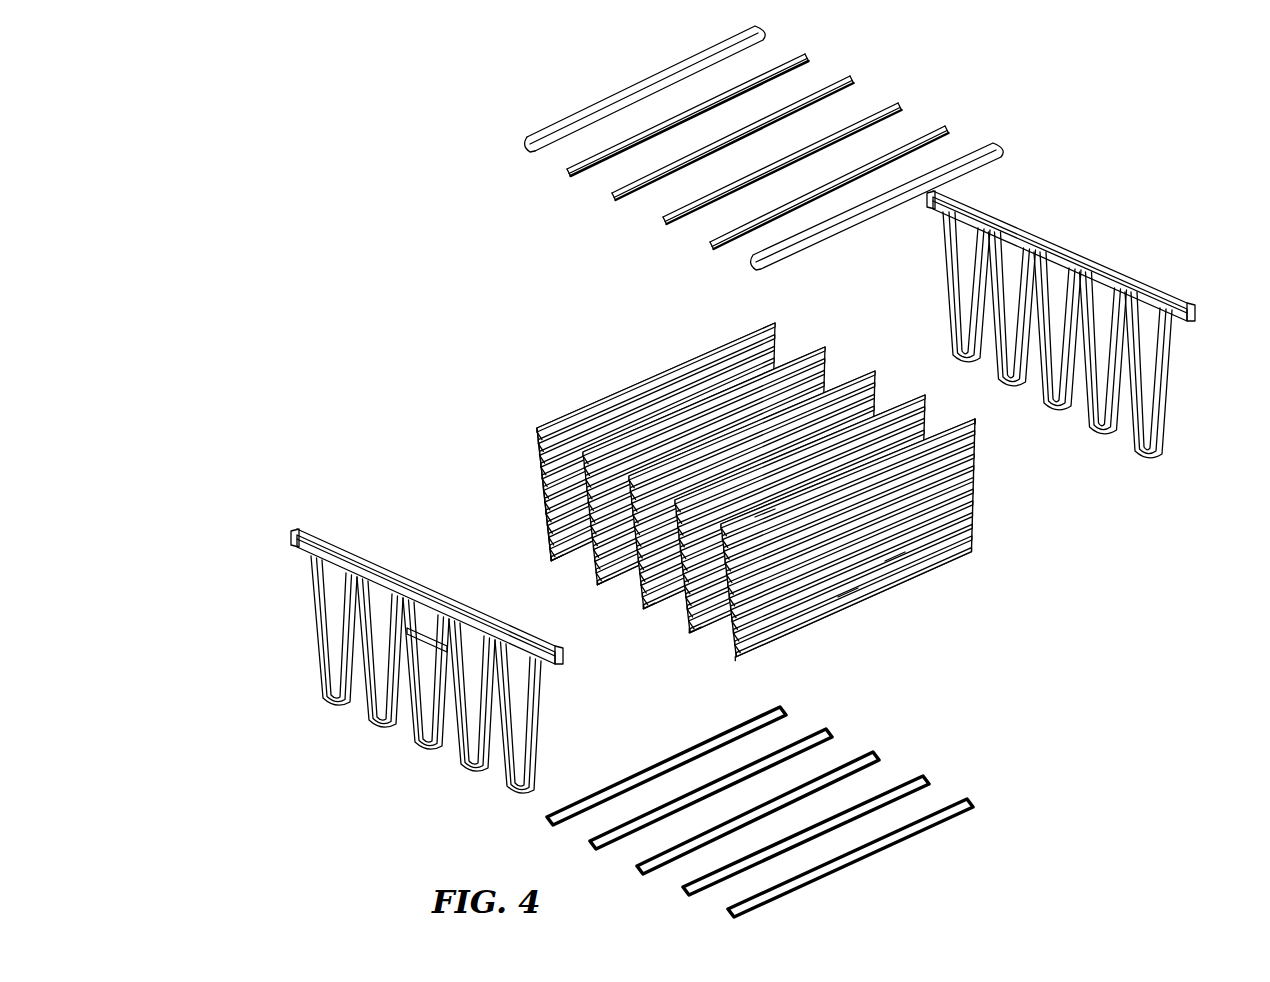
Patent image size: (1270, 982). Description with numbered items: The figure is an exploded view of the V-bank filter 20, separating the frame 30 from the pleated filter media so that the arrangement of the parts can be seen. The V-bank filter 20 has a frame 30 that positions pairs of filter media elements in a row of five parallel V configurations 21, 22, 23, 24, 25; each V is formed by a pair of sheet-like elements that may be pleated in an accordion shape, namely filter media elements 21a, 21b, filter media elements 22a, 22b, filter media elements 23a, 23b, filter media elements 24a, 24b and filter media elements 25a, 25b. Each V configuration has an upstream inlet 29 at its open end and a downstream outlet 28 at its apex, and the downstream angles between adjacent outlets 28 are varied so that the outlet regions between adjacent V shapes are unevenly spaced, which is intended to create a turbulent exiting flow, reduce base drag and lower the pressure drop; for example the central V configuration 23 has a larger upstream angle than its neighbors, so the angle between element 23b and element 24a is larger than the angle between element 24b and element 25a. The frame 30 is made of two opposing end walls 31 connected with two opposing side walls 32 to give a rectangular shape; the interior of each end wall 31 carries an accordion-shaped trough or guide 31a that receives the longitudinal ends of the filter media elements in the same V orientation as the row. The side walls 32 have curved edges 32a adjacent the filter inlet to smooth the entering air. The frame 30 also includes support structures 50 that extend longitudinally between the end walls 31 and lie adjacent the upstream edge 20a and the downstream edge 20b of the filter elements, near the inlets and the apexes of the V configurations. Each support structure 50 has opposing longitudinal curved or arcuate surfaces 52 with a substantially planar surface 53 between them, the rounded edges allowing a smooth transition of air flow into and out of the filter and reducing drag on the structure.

The V-bank filter 20 is at (631, 432).
The upstream edge 20a is at (613, 427).
The downstream edge 20b is at (733, 663).
The V configuration 21 is at (860, 542).
The filter media element 21a is at (838, 597).
The filter media element 21b is at (945, 422).
The V configuration 22 is at (784, 528).
The filter media element 22a is at (698, 645).
The filter media element 22b is at (690, 645).
The V configuration 23 is at (752, 498).
The filter media element 23a is at (683, 635).
The filter media element 23b is at (663, 620).
The V configuration 24 is at (700, 480).
The filter media element 24a is at (630, 615).
The filter media element 24b is at (607, 602).
The V configuration 25 is at (636, 445).
The filter media element 25a is at (565, 583).
The filter media element 25b is at (546, 567).
The downstream outlet 28 is at (885, 561).
The upstream inlet 29 is at (755, 517).
The frame 30 is at (733, 479).
The end wall 31 is at (733, 492).
The trough or guide 31a is at (1150, 458).
The side wall 32 is at (783, 135).
The curved surface or edge 32a is at (553, 150).
The support structure 50 is at (772, 470).
The curved or arcuate surface 52 is at (968, 122).
The substantially planar surface 53 is at (845, 134).